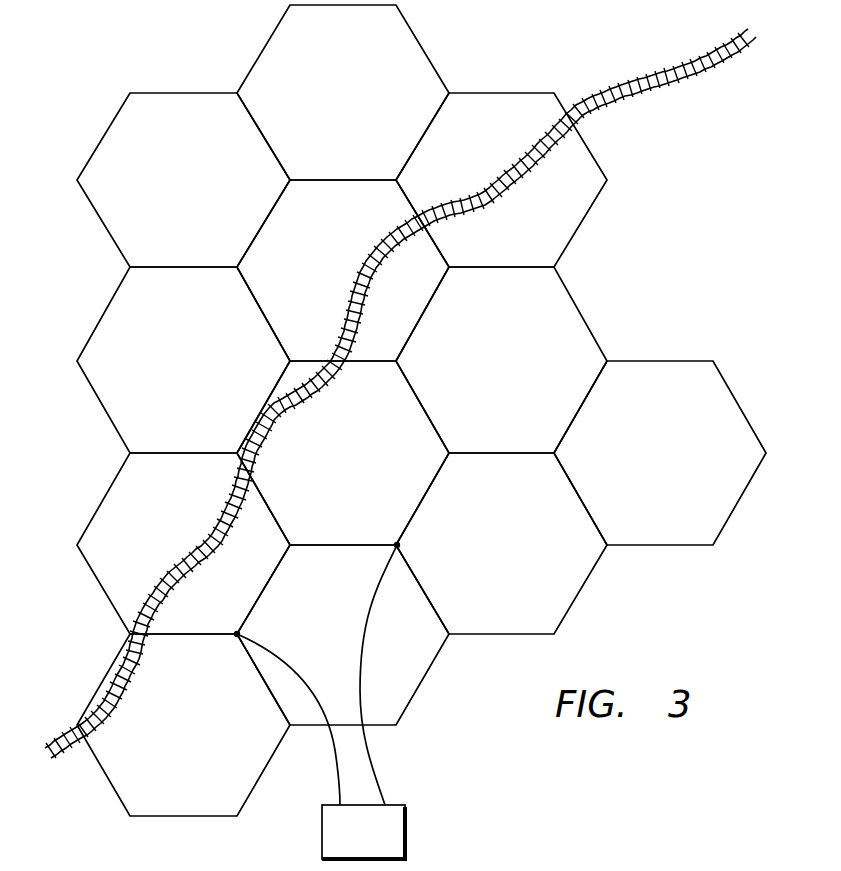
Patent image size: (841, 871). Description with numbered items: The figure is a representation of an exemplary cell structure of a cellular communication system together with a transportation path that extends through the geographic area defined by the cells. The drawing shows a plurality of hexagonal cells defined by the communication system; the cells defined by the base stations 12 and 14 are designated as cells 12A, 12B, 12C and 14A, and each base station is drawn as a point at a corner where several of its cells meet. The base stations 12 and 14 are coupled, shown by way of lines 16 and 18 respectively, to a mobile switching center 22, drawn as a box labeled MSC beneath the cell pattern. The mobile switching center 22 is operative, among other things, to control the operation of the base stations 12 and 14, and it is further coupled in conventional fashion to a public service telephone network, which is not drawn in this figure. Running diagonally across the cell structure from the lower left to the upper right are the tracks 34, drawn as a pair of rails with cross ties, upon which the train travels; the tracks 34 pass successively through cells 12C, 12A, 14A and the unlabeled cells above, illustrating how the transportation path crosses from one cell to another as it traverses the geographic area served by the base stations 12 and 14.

The base station 12 is at (240, 633).
The cell 12A is at (162, 537).
The cell 12B is at (343, 606).
The cell 12C is at (188, 730).
The base station 14 is at (400, 545).
The cell 14A is at (358, 464).
The line 16 is at (337, 764).
The line 18 is at (372, 763).
The mobile switching center 22 is at (405, 830).
The tracks 34 is at (608, 87).